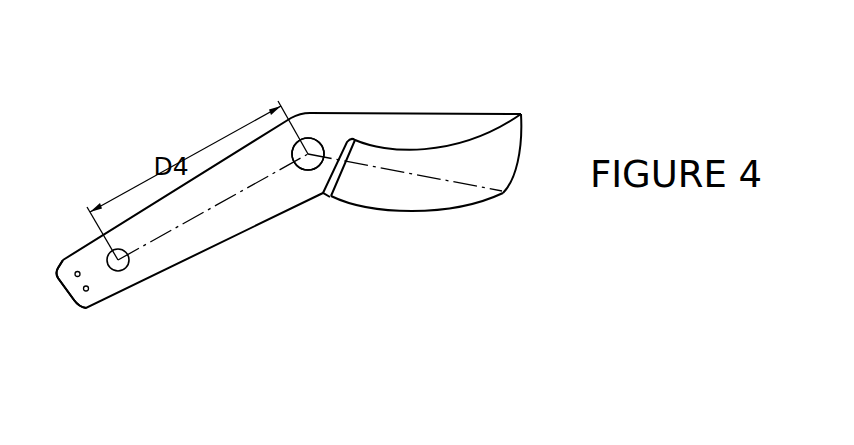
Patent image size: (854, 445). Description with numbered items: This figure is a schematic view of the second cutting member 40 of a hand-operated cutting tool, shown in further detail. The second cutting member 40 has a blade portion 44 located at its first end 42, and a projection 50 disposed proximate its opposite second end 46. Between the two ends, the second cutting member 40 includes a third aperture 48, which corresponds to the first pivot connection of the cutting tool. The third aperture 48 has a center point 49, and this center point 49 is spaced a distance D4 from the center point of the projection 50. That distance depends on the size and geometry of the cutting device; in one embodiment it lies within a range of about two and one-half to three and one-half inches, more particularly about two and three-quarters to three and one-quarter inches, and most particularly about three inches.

The second cutting member 40 is at (300, 111).
The first end 42 is at (541, 105).
The blade portion 44 is at (466, 194).
The second end 46 is at (95, 328).
The third aperture 48 is at (308, 154).
The center point 49 is at (326, 137).
The projection 50 is at (109, 254).